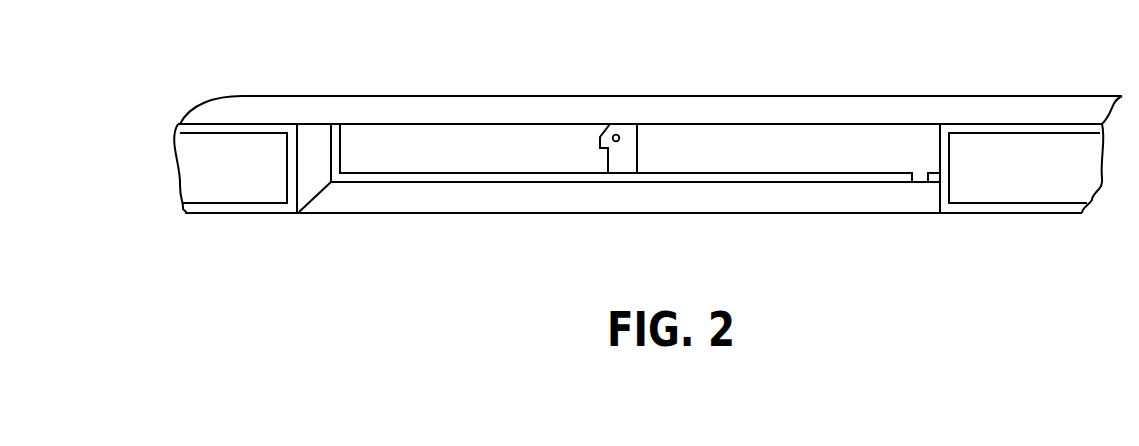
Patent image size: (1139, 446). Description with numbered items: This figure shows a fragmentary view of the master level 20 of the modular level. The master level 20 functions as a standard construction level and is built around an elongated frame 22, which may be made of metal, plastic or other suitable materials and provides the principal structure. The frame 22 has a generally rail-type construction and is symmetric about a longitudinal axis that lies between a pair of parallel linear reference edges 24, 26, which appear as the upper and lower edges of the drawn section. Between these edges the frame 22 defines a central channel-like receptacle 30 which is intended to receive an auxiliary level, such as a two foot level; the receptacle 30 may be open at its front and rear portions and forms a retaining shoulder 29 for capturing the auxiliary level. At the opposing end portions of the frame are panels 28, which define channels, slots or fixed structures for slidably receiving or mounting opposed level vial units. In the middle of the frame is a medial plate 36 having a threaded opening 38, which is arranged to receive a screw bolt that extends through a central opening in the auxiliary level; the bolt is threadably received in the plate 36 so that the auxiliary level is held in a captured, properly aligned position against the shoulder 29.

The master level 20 is at (413, 96).
The elongated frame 22 is at (248, 96).
The linear reference edge 24 is at (922, 97).
The linear reference edge 26 is at (895, 203).
The panels 28 is at (238, 163).
The retaining shoulder 29 is at (385, 178).
The central channel-like receptacle 30 is at (493, 198).
The medial plate 36 is at (625, 158).
The threaded opening 38 is at (620, 130).